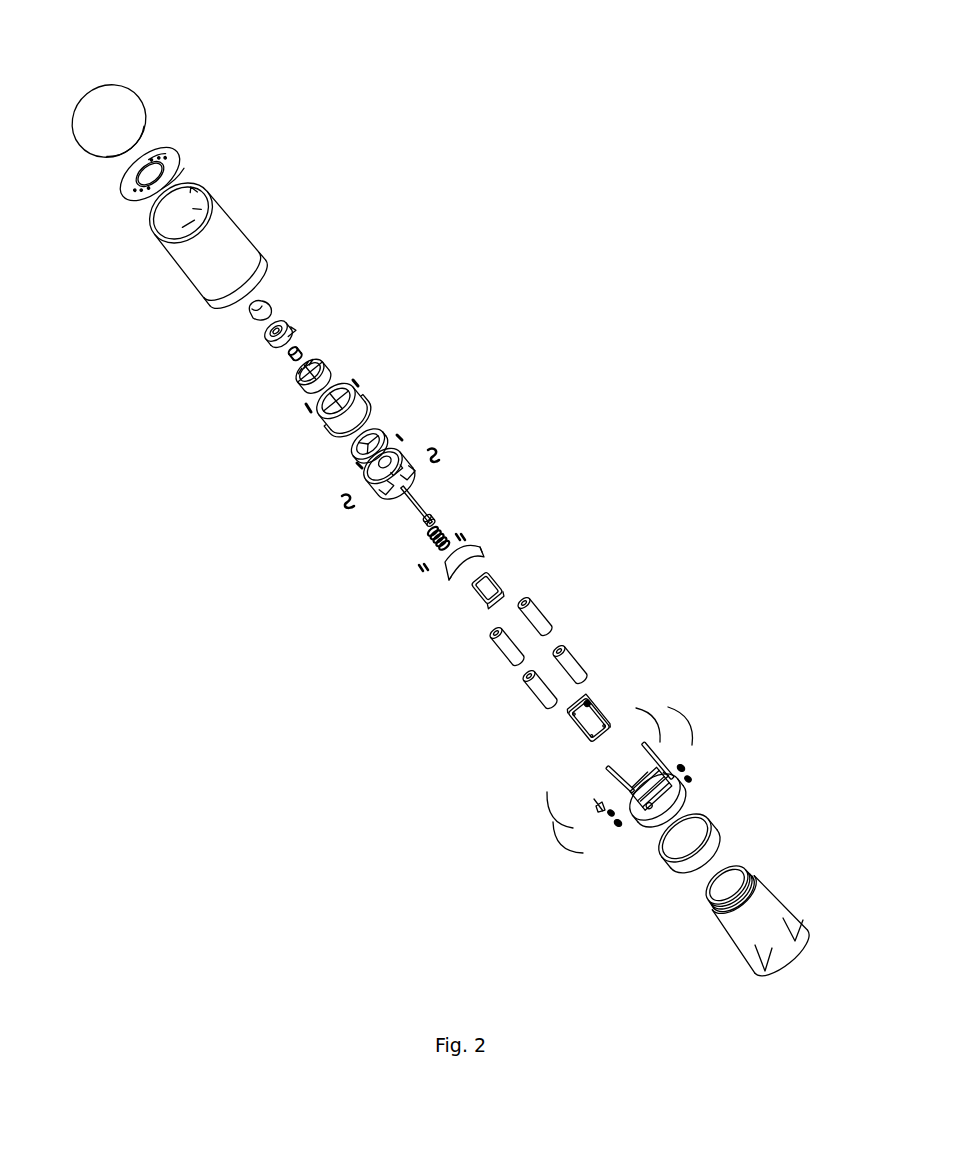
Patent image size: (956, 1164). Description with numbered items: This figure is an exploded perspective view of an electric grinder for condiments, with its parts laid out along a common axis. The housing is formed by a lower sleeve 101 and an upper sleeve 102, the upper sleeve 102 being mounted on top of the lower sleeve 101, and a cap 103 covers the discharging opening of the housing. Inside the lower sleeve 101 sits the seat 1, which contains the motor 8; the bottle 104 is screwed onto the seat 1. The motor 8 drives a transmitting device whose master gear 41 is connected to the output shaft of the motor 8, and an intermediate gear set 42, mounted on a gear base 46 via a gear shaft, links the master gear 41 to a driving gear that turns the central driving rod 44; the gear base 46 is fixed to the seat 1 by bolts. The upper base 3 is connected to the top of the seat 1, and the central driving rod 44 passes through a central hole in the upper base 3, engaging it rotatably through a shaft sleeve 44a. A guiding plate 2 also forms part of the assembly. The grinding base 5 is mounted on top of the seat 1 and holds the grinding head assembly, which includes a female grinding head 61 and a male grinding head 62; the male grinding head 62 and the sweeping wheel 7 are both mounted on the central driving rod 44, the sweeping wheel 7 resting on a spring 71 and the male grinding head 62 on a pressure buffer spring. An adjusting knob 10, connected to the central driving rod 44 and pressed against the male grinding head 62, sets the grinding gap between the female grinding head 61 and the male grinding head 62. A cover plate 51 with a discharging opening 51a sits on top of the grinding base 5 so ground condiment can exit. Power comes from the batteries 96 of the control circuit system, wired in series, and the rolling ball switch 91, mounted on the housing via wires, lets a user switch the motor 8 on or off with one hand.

The cap 103 is at (120, 87).
The cover plate 51 is at (172, 152).
The discharging opening 51a is at (125, 190).
The upper sleeve 102 is at (228, 242).
The adjusting knob 10 is at (250, 310).
The male grinding head 62 is at (288, 322).
The female grinding head 61 is at (305, 385).
The grinding base 5 is at (358, 397).
The sweeping wheel 7 is at (387, 432).
The upper base 3 is at (402, 452).
The spring 71 is at (345, 503).
The central driving rod 44 is at (420, 503).
The shaft sleeve 44a is at (428, 525).
The intermediate gear set 42 is at (438, 567).
The gear base 46 is at (480, 555).
The guiding plate 2 is at (485, 603).
The batteries 96 is at (547, 618).
The motor 8 is at (595, 712).
The master gear 41 is at (573, 713).
The seat 1 is at (682, 797).
The rolling ball switch 91 is at (598, 810).
The lower sleeve 101 is at (683, 872).
The bottle 104 is at (763, 907).